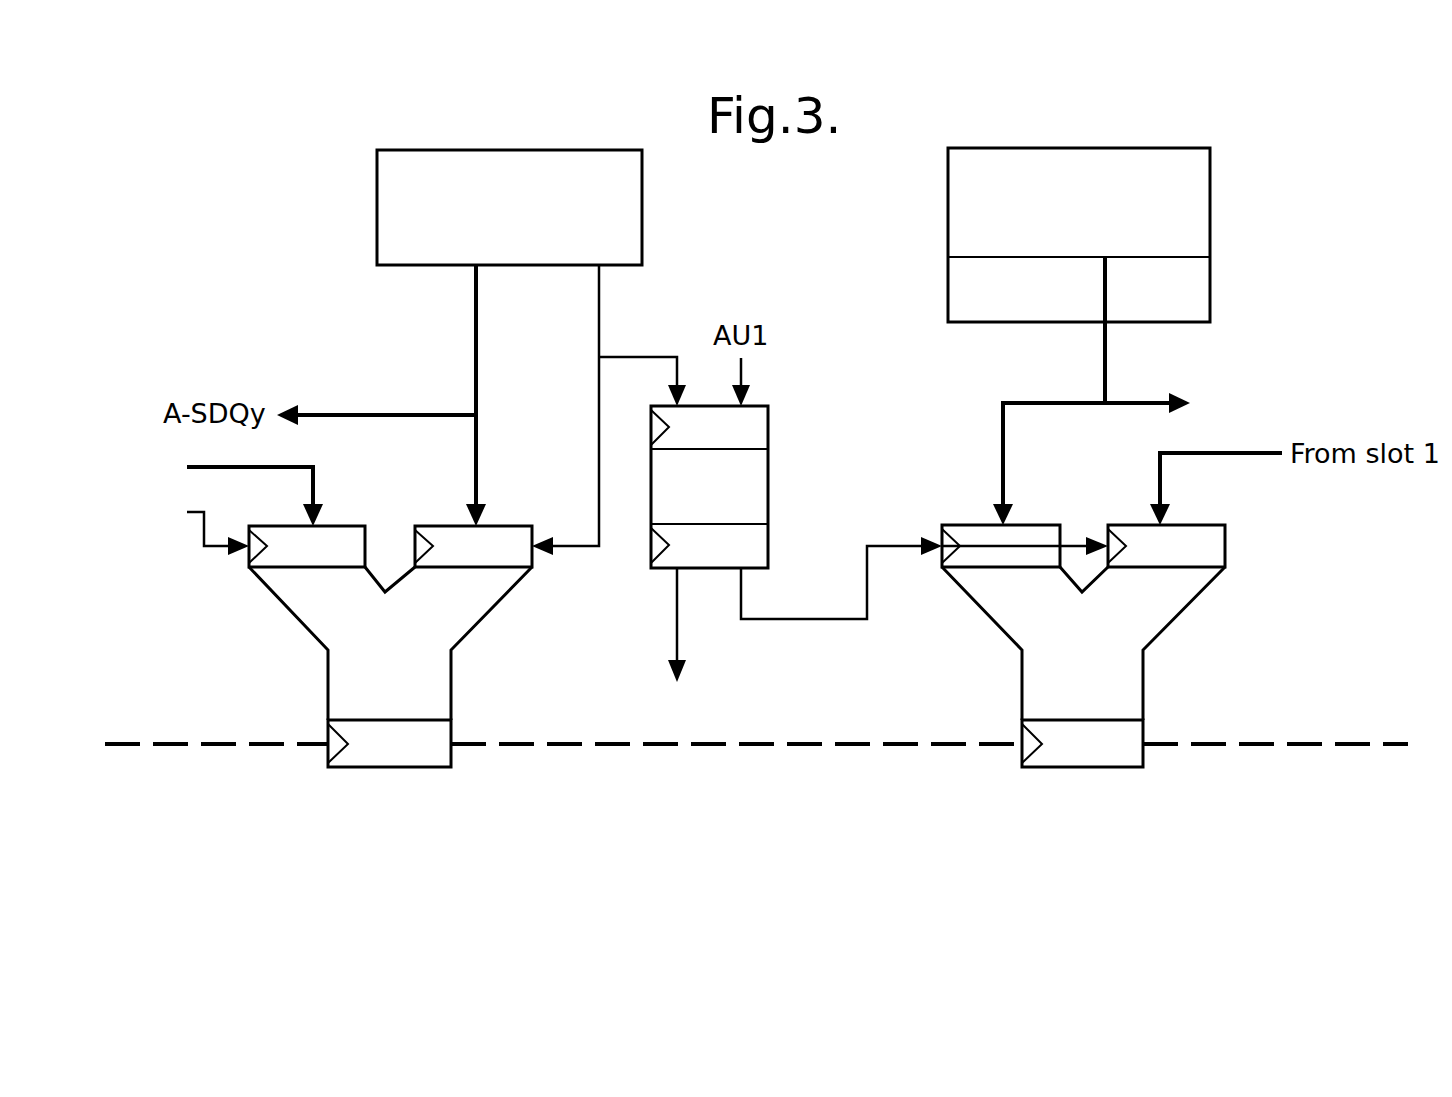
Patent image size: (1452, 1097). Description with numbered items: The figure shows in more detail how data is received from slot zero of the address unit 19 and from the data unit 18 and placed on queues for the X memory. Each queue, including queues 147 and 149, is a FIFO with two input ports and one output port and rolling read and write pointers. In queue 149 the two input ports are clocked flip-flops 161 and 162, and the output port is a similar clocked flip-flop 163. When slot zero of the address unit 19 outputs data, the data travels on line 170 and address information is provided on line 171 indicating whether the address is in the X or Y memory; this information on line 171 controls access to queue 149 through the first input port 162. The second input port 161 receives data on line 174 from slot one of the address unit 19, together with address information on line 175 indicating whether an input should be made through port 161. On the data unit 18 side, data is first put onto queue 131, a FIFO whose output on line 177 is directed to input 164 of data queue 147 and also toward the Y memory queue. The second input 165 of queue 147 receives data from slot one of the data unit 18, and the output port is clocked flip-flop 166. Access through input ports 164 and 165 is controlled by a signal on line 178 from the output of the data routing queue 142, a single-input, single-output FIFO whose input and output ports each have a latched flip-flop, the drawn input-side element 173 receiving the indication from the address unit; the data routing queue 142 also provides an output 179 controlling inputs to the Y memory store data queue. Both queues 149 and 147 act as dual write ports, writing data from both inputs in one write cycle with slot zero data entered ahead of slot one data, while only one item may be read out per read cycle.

The address unit 19 is at (427, 149).
The data unit 18 is at (1165, 148).
The queue 131 is at (1210, 287).
The line 170 is at (478, 326).
The line 171 is at (600, 326).
The DRQ input register 173 is at (770, 427).
The data routing queue 142 is at (802, 493).
The output 179 is at (677, 638).
The line 178 is at (825, 620).
The line 177 is at (1107, 382).
The line 174 is at (195, 470).
The line 175 is at (204, 535).
The clocked flip-flop 161 is at (338, 524).
The clocked flip-flop 162 is at (505, 524).
The queue 149 is at (328, 703).
The clocked flip-flop 163 is at (388, 768).
The clocked flip-flop 164 is at (1032, 523).
The clocked flip-flop 165 is at (1200, 523).
The data queue 147 is at (1122, 699).
The clocked flip-flop 166 is at (1095, 768).